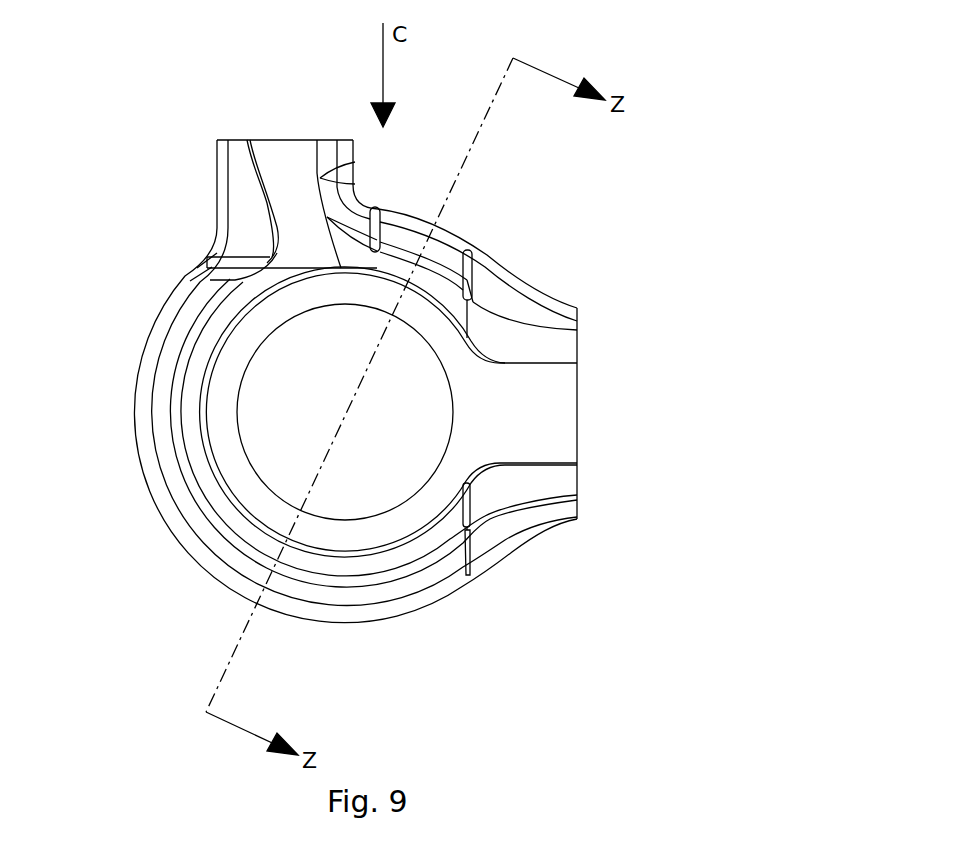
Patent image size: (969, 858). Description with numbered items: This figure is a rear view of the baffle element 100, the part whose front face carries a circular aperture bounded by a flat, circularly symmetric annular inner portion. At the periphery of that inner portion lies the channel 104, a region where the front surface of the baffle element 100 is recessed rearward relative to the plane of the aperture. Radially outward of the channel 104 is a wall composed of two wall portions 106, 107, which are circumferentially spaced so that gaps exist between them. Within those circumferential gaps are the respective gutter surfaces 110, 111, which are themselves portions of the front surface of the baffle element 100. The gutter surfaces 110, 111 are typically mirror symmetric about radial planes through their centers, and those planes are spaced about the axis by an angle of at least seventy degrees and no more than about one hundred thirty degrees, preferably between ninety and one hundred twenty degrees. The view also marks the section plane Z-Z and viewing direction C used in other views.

The baffle element 100 is at (112, 119).
The channel 104 is at (193, 439).
The wall portion 106 is at (200, 500).
The wall portion 107 is at (450, 233).
The gutter surface 110 is at (283, 193).
The gutter surface 111 is at (543, 393).